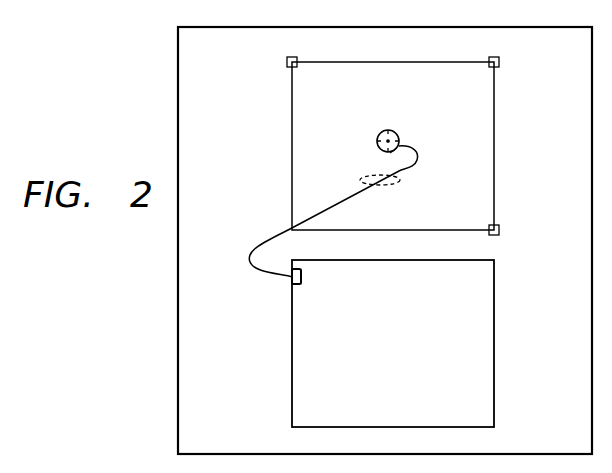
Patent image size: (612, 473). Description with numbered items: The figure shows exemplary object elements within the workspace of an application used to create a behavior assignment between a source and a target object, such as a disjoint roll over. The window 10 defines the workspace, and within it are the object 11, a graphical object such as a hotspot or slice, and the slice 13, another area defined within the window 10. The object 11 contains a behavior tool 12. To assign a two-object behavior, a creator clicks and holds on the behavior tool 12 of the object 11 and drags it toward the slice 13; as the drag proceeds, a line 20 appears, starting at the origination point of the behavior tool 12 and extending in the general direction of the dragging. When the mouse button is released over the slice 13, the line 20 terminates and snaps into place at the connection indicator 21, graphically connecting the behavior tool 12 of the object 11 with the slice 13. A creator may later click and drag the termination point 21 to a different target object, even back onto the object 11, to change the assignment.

The window 10 is at (178, 241).
The object 11 is at (297, 133).
The behavior tool 12 is at (397, 133).
The slice 13 is at (298, 360).
The line 20 is at (400, 180).
The connection indicator 21 is at (293, 279).